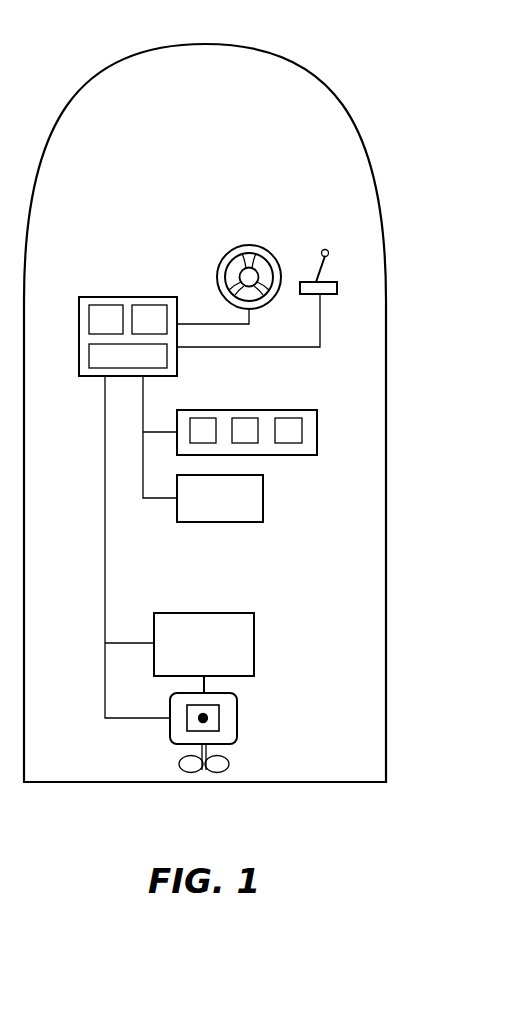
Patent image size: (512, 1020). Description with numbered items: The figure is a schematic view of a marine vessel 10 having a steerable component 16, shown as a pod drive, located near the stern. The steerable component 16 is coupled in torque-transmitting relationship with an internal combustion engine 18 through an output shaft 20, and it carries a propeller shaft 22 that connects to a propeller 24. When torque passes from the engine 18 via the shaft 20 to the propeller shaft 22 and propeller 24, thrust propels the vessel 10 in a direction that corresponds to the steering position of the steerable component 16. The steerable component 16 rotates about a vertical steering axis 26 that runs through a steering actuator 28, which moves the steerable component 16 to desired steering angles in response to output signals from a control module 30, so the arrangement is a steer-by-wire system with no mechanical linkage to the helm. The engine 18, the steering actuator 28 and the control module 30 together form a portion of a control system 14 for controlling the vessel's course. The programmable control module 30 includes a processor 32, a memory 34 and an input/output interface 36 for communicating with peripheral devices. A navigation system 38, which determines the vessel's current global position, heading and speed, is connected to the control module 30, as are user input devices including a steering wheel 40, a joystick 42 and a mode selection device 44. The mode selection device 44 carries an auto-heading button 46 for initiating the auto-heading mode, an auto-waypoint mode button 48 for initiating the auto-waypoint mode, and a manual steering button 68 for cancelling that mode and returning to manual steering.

The marine vessel 10 is at (387, 292).
The control system 14 is at (309, 190).
The steerable component 16 is at (220, 724).
The internal combustion engine 18 is at (254, 633).
The output shaft 20 is at (205, 685).
The propeller shaft 22 is at (207, 752).
The propeller 24 is at (226, 766).
The steering axis 26 is at (203, 722).
The steering actuator 28 is at (222, 720).
The control module 30 is at (112, 306).
The processor 32 is at (104, 304).
The memory 34 is at (150, 304).
The input/output interface 36 is at (88, 355).
The navigation system 38 is at (264, 500).
The steering wheel 40 is at (245, 246).
The joystick 42 is at (330, 281).
The mode selection device 44 is at (270, 418).
The auto-heading button 46 is at (203, 411).
The auto-waypoint mode button 48 is at (245, 411).
The manual steering button 68 is at (290, 411).